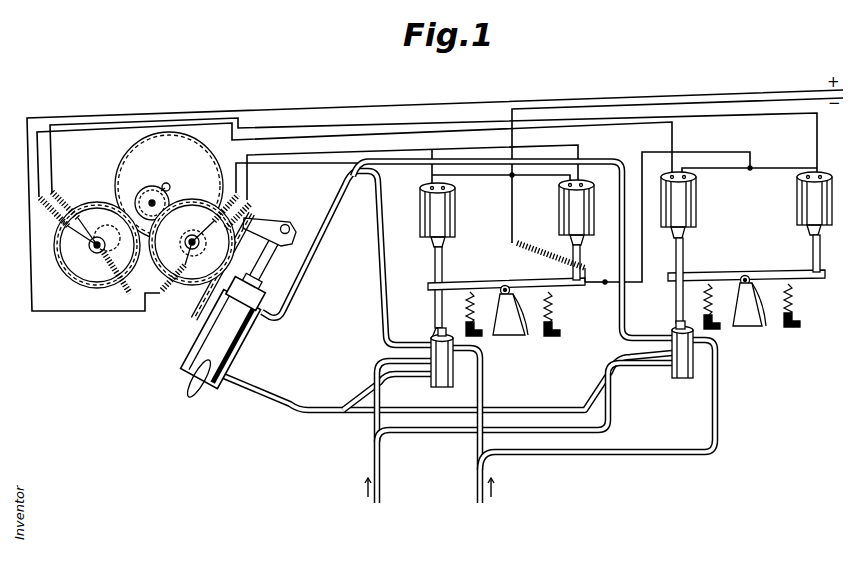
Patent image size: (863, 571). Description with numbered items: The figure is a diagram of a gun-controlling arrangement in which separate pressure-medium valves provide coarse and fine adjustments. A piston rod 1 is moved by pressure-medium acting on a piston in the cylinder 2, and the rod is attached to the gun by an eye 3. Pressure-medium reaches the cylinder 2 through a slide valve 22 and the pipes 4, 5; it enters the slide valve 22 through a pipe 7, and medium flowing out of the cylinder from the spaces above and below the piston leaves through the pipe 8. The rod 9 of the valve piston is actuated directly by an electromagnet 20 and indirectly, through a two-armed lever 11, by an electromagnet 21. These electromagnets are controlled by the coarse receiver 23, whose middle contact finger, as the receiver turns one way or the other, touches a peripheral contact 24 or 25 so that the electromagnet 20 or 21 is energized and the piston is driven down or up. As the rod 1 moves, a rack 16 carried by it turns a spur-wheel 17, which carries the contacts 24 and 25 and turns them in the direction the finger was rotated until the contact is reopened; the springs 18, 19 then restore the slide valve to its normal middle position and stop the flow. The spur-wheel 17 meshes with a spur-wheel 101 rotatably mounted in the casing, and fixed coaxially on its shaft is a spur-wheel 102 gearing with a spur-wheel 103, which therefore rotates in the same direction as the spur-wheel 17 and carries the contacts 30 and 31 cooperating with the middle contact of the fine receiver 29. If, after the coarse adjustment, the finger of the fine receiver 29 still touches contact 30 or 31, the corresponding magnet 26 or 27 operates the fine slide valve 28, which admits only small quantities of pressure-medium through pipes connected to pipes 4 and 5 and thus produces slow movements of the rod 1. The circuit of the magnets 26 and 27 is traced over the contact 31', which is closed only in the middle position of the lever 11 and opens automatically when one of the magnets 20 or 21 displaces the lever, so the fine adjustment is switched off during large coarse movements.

The piston rod 1 is at (259, 263).
The cylinder 2 is at (238, 348).
The eye 3 is at (291, 221).
The pipe 4 is at (312, 258).
The pipe 5 is at (292, 397).
The pipe 7 is at (374, 433).
The pipe 8 is at (478, 456).
The rod of the valve piston 9 is at (435, 310).
The two-armed lever 11 is at (486, 283).
The rack 16 is at (192, 333).
The spur-wheel 17 is at (163, 282).
The spring 18 is at (479, 314).
The spring 19 is at (560, 314).
The electromagnet 20 is at (420, 225).
The electromagnet 21 is at (559, 220).
The slide valve 22 is at (455, 361).
The coarse receiver 23 is at (188, 252).
The peripheral contact 24 is at (214, 212).
The peripheral contact 25 is at (245, 216).
The magnet 26 is at (696, 214).
The magnet 27 is at (797, 213).
The fine slide valve 28 is at (697, 355).
The fine receiver 29 is at (86, 257).
The peripheral contact 30 is at (58, 223).
The peripheral contact 31 is at (74, 209).
The contact 31' is at (562, 278).
The spur-wheel 101 is at (146, 193).
The spur-wheel 102 is at (210, 141).
The spur-wheel 103 is at (110, 285).